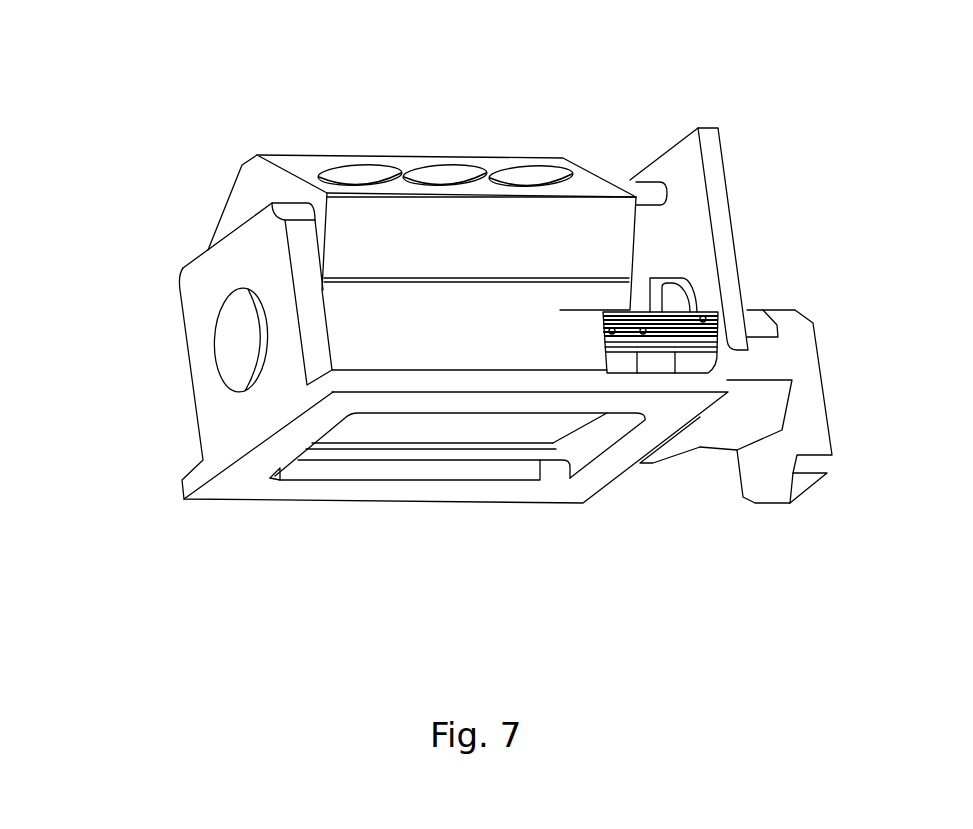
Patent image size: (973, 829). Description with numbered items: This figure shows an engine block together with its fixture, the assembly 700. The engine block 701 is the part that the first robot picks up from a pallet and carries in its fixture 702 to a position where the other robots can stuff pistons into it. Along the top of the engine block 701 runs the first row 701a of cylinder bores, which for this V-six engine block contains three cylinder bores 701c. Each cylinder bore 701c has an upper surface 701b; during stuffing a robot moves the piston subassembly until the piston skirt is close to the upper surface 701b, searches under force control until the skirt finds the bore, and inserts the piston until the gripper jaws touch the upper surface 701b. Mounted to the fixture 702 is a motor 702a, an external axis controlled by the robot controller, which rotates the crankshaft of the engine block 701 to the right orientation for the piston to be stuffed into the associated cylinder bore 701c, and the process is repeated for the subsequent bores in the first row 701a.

The receptacle assembly 700 is at (493, 622).
The engine block 701 is at (242, 198).
The first row of cylinder bores 701a is at (575, 170).
The upper surface of the cylinder bore 701b is at (397, 163).
The cylinder bore 701c is at (360, 173).
The fixture 702 is at (733, 215).
The motor 702a is at (827, 377).